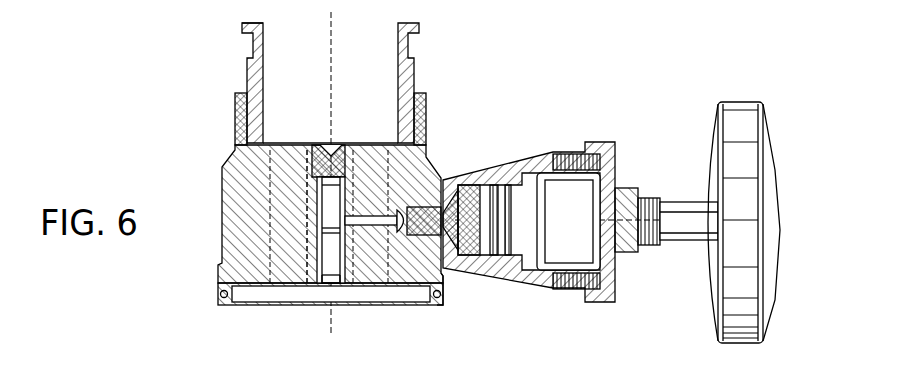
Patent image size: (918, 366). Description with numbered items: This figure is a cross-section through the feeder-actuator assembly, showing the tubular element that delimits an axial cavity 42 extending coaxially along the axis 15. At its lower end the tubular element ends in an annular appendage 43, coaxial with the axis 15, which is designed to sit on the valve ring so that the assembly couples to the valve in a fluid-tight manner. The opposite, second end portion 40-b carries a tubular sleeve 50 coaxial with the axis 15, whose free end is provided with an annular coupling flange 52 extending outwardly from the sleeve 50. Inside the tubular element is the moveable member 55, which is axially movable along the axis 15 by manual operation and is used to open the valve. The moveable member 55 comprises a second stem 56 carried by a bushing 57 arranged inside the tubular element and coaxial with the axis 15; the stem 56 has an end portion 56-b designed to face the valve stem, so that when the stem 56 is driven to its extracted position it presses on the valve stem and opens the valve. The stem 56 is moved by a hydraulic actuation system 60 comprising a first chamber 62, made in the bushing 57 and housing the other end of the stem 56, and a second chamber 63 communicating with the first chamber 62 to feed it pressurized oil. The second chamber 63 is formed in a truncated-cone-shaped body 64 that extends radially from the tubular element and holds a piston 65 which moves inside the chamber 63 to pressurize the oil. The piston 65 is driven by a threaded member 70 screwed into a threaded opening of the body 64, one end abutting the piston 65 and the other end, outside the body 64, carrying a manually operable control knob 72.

The axis 15 is at (263, 44).
The second end portion 40-b is at (200, 158).
The axial cavity 42 is at (283, 275).
The annular appendage 43 is at (437, 304).
The tubular sleeve 50 is at (413, 76).
The annular coupling flange 52 is at (243, 26).
The moveable member 55 is at (358, 185).
The second stem 56 is at (330, 200).
The end portion 56-b is at (330, 284).
The bushing 57 is at (303, 165).
The hydraulic actuation system 60 is at (592, 98).
The first chamber 62 is at (320, 240).
The second chamber 63 is at (467, 205).
The truncated-cone-shaped body 64 is at (508, 108).
The piston 65 is at (562, 240).
The threaded member 70 is at (646, 204).
The control knob 72 is at (737, 126).